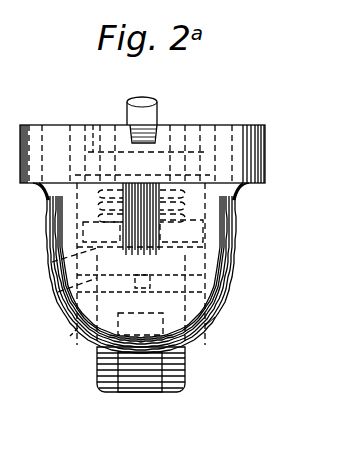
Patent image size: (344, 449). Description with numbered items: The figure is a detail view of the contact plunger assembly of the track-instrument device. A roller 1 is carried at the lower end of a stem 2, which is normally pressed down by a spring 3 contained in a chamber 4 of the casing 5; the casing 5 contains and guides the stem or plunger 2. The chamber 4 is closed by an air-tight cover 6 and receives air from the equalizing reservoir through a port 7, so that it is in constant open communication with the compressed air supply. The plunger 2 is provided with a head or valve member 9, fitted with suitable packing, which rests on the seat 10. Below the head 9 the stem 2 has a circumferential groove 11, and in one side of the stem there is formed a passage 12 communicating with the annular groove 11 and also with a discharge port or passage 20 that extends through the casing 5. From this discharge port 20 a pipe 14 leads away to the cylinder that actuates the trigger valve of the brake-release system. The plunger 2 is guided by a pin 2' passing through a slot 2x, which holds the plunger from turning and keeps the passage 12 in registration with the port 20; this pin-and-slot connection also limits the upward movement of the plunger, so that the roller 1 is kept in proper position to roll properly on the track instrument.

The roller 1 is at (138, 378).
The stem 2 is at (155, 369).
The pin 2' is at (224, 325).
The slot 2x is at (72, 335).
The spring 3 is at (181, 231).
The chamber 4 is at (241, 202).
The casing 5 is at (230, 238).
The air-tight cover 6 is at (93, 126).
The port 7 is at (129, 256).
The head or valve member 9 is at (141, 264).
The seat 10 is at (52, 262).
The circumferential groove 11 is at (58, 292).
The passage 12 is at (150, 259).
The pipe 14 is at (160, 110).
The discharge port 20 is at (141, 300).